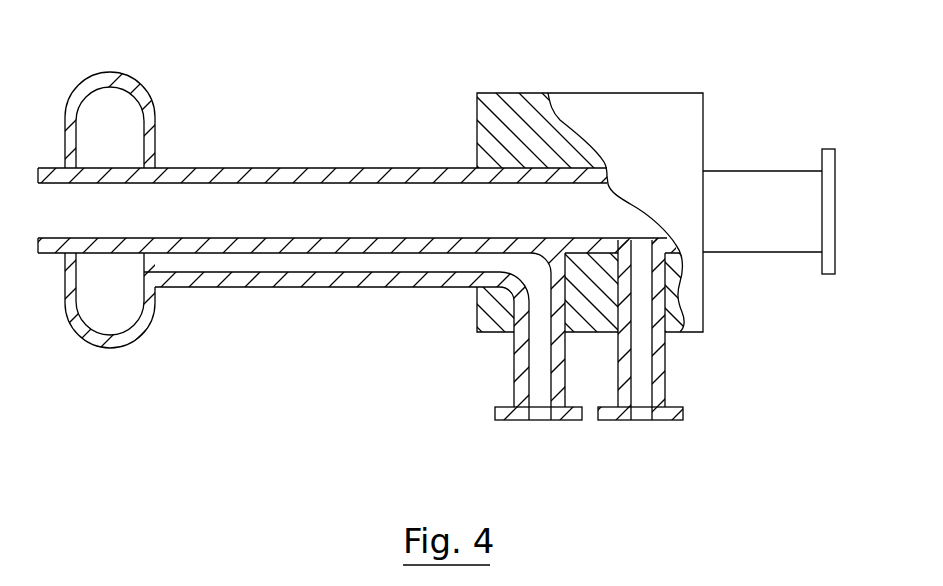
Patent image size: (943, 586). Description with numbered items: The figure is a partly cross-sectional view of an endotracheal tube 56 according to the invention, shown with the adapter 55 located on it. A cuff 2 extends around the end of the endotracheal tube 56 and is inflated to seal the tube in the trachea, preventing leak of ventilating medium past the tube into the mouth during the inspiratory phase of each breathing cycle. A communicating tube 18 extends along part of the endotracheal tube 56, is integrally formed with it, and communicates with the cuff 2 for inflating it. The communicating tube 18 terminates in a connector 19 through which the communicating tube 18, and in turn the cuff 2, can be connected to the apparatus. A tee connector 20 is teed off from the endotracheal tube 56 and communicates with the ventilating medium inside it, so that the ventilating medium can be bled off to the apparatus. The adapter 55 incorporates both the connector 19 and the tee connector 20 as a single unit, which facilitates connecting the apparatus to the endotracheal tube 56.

The cuff 2 is at (153, 120).
The communicating tube 18 is at (280, 287).
The connector 19 is at (535, 420).
The tee connector 20 is at (642, 420).
The adapter 55 is at (477, 120).
The endotracheal tube 56 is at (747, 171).